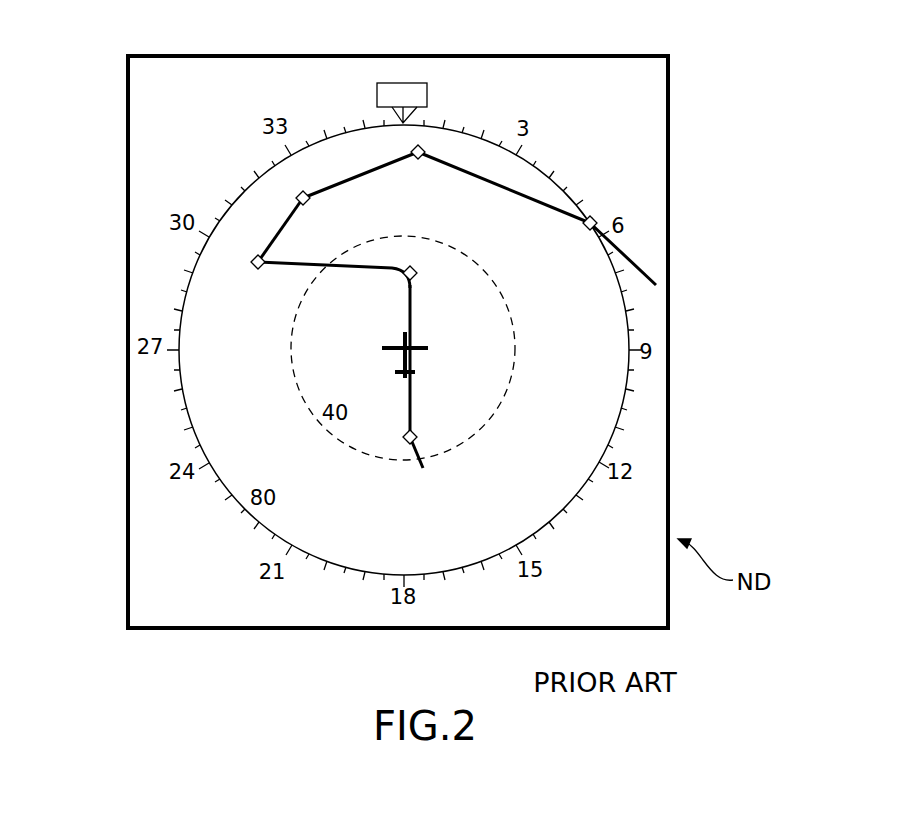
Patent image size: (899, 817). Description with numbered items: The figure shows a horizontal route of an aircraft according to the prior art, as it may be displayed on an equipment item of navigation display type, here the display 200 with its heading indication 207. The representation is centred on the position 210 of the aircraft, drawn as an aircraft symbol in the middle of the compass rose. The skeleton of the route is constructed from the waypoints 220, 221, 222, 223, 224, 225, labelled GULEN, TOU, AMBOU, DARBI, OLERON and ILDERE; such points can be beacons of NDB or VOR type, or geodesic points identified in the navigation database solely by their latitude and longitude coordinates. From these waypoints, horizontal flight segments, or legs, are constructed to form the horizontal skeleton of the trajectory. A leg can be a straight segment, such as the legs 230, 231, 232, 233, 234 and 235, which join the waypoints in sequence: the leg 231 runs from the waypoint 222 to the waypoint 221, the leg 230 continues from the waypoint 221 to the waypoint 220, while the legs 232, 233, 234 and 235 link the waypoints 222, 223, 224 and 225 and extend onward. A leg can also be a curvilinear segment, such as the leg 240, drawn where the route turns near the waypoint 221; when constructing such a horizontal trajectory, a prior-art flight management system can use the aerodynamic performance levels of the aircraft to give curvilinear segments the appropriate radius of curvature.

The navigation display screen 200 is at (128, 585).
The heading indicator box 207 is at (402, 103).
The position of the aircraft 210 is at (420, 342).
The waypoint 220 is at (403, 437).
The waypoint 221 is at (408, 272).
The waypoint 222 is at (255, 261).
The waypoint 223 is at (297, 197).
The waypoint 224 is at (403, 149).
The waypoint 225 is at (592, 222).
The leg 230 is at (413, 393).
The leg 231 is at (305, 268).
The leg 232 is at (279, 232).
The leg 233 is at (355, 174).
The leg 234 is at (522, 195).
The leg 235 is at (628, 258).
The curvilinear leg 240 is at (402, 285).